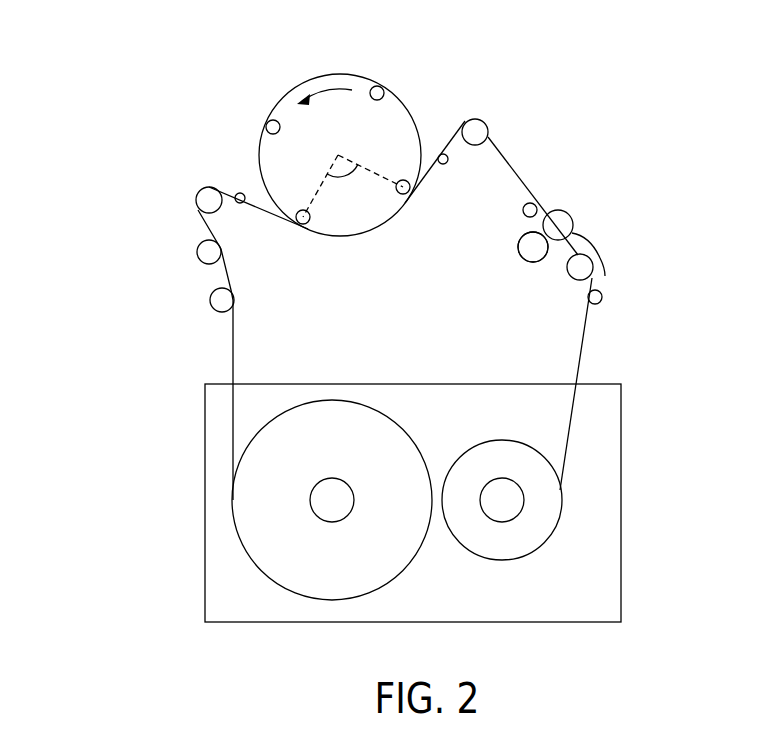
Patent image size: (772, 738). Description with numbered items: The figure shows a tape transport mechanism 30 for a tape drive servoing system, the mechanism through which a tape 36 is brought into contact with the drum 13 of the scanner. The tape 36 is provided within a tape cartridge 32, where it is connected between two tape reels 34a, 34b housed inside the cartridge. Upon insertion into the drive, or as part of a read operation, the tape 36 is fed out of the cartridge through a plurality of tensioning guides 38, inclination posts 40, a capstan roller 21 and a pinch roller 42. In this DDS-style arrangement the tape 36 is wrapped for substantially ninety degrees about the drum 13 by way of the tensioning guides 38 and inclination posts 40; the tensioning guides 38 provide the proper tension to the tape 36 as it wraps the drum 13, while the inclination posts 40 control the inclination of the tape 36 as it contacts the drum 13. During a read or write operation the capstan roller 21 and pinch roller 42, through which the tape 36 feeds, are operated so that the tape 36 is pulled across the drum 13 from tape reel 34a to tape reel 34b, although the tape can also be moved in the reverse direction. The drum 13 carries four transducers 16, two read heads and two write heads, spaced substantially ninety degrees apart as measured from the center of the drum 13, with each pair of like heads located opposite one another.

The drum 13 is at (322, 74).
The transducers 16 is at (383, 88).
The capstan roller 21 is at (605, 276).
The tape transport mechanism 30 is at (110, 136).
The tape cartridge 32 is at (621, 425).
The tape reel 34a is at (321, 505).
The tape reel 34b is at (513, 507).
The tape 36 is at (233, 340).
The tensioning guides 38 is at (189, 180).
The inclination posts 40 is at (241, 204).
The pinch roller 42 is at (525, 262).